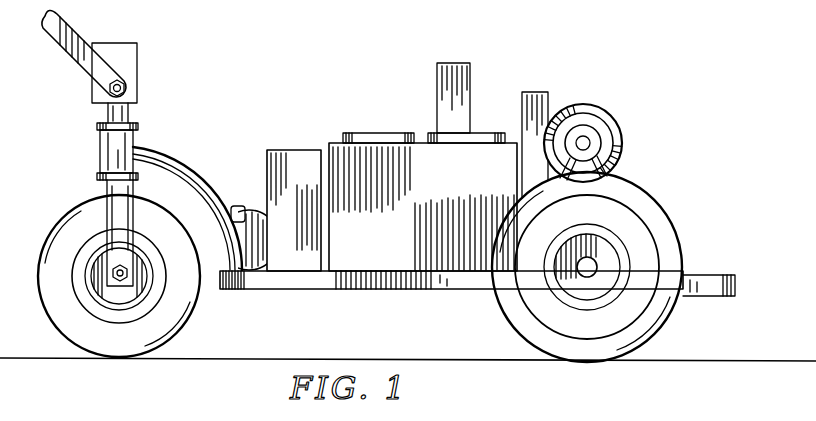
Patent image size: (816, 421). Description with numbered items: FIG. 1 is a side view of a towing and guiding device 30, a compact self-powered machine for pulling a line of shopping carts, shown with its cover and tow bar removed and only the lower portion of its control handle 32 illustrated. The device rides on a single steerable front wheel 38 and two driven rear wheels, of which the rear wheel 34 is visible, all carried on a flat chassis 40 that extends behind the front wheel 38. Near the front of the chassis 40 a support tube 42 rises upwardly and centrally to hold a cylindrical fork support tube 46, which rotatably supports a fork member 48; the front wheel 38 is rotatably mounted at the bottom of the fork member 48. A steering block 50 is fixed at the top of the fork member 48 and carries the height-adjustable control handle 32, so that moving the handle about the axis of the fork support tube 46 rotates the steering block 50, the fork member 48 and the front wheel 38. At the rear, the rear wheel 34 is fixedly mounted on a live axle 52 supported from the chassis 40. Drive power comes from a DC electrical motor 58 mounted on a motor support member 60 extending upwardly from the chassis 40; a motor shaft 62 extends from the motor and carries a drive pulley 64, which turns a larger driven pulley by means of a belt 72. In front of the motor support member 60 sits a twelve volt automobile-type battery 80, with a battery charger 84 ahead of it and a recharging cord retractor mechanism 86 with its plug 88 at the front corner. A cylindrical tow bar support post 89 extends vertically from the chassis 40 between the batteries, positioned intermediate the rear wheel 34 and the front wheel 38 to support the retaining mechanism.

The towing and guiding device 30 is at (224, 303).
The control handle 32 is at (63, 42).
The rear wheel 34 is at (530, 332).
The front wheel 38 is at (62, 314).
The chassis 40 is at (380, 276).
The support tube 42 is at (180, 168).
The fork support tube 46 is at (98, 130).
The fork member 48 is at (98, 178).
The steering block 50 is at (128, 60).
The live axle 52 is at (588, 260).
The DC electrical motor 58 is at (597, 112).
The motor support member 60 is at (534, 100).
The motor shaft 62 is at (590, 143).
The drive pulley 64 is at (596, 135).
The belt 72 is at (618, 163).
The battery 80 is at (428, 260).
The battery charger 84 is at (293, 253).
The recharging cord retractor mechanism 86 is at (257, 258).
The plug 88 is at (236, 206).
The tow bar support post 89 is at (462, 88).